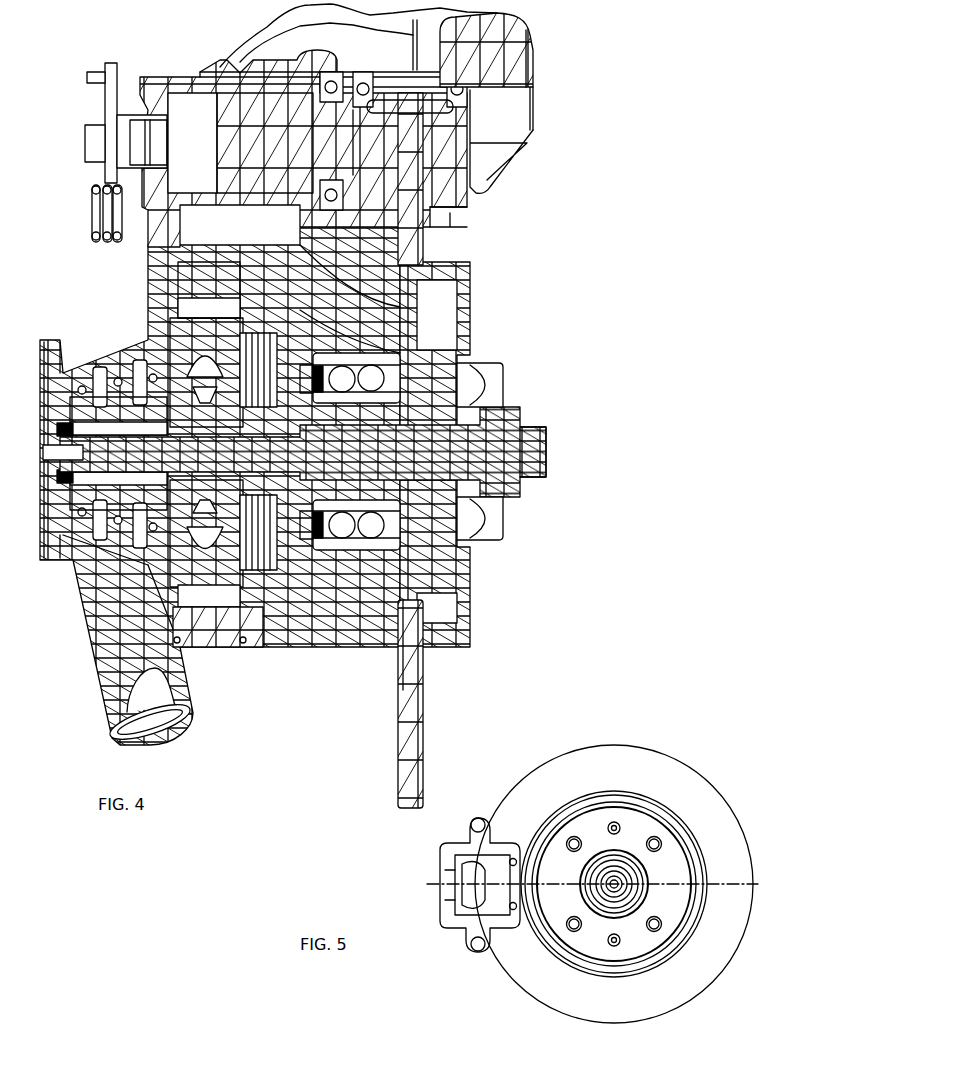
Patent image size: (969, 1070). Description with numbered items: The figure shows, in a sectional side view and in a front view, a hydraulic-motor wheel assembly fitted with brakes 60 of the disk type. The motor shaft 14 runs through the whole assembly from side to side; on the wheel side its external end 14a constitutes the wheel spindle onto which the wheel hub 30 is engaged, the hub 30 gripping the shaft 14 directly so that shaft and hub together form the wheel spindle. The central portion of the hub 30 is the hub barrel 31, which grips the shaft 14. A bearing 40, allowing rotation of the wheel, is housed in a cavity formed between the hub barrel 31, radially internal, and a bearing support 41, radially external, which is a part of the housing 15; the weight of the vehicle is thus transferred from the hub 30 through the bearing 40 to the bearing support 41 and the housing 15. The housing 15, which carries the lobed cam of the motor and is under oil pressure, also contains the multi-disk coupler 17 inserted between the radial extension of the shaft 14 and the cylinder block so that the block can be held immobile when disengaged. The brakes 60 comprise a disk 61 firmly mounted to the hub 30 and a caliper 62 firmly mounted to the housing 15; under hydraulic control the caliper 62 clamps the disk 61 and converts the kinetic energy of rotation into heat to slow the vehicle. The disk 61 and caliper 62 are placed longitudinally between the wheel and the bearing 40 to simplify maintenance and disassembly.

In FIG. 4, the shaft 14 is at (155, 447).
In FIG. 5, the shaft 14 is at (618, 876).
In FIG. 4, the external end 14a is at (508, 449).
In FIG. 4, the housing 15 is at (287, 650).
In FIG. 4, the multi-disk coupler 17 is at (282, 550).
In FIG. 4, the wheel hub 30 is at (448, 518).
In FIG. 4, the hub barrel 31 is at (374, 494).
In FIG. 4, the bearing 40 is at (372, 391).
In FIG. 4, the bearing support 41 is at (358, 347).
In FIG. 4, the brakes 60 is at (540, 158).
In FIG. 4, the disk 61 is at (410, 230).
In FIG. 5, the disk 61 is at (659, 785).
In FIG. 4, the caliper 62 is at (442, 170).
In FIG. 5, the caliper 62 is at (453, 846).